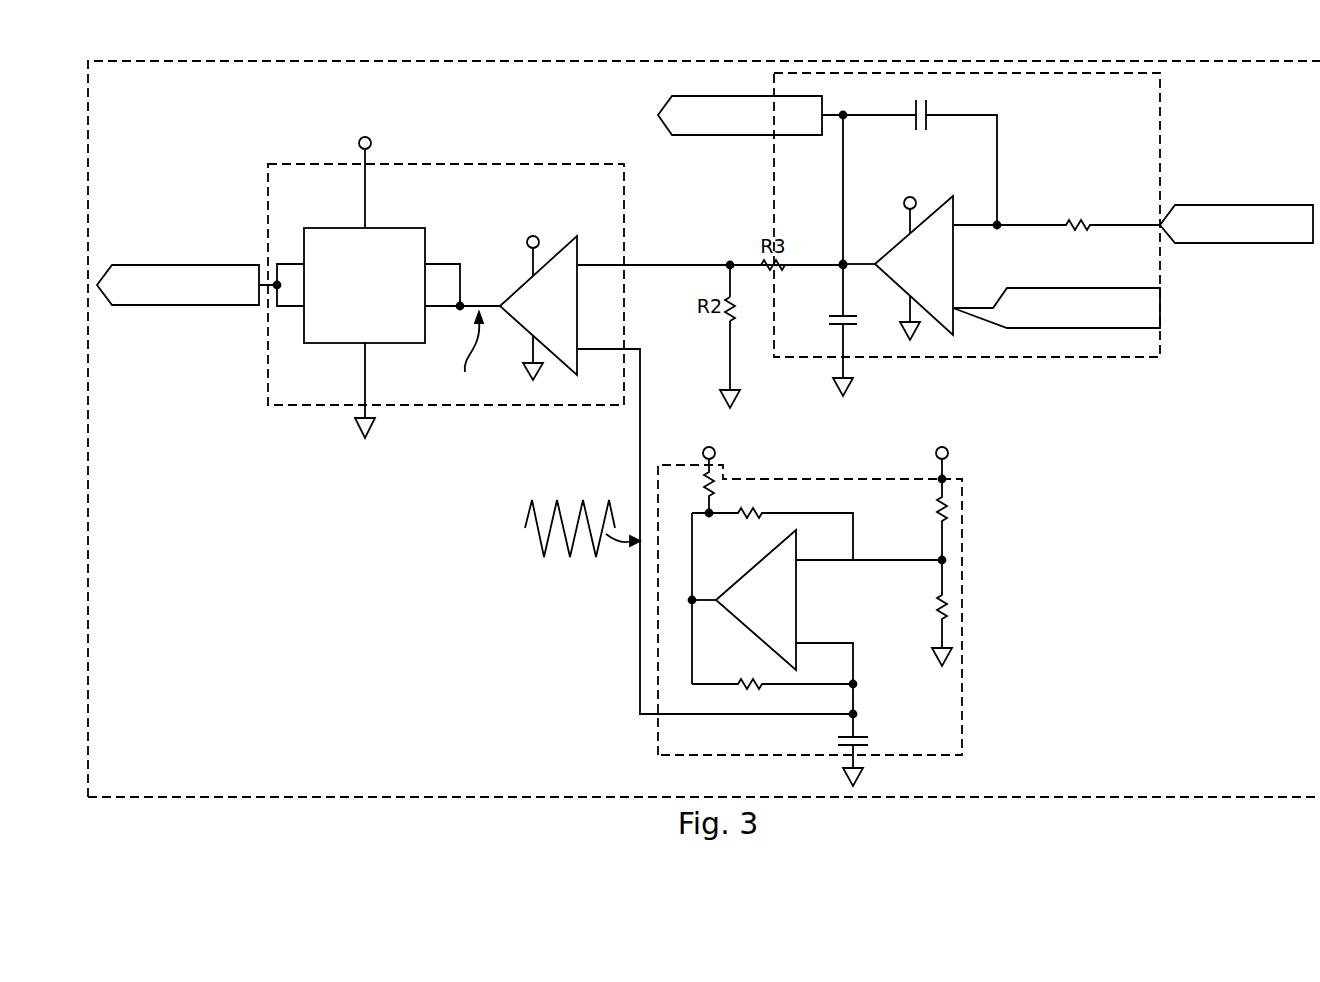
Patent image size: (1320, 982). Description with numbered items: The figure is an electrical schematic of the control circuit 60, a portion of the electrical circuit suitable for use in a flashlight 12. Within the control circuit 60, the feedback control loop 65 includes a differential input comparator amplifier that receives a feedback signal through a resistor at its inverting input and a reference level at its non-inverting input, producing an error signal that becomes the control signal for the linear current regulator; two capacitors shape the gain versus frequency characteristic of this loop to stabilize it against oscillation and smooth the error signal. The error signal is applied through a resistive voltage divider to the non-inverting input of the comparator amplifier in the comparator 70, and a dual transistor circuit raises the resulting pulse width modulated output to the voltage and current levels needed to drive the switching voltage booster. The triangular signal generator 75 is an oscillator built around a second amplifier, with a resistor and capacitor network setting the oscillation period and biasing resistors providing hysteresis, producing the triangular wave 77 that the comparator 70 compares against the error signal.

The flashlight 12 is at (1319, 462).
The control circuit 60 is at (558, 110).
The feedback control loop 65 is at (1116, 117).
The comparator 70 is at (448, 205).
The triangular signal generator 75 is at (910, 728).
The triangular wave 77 is at (536, 542).